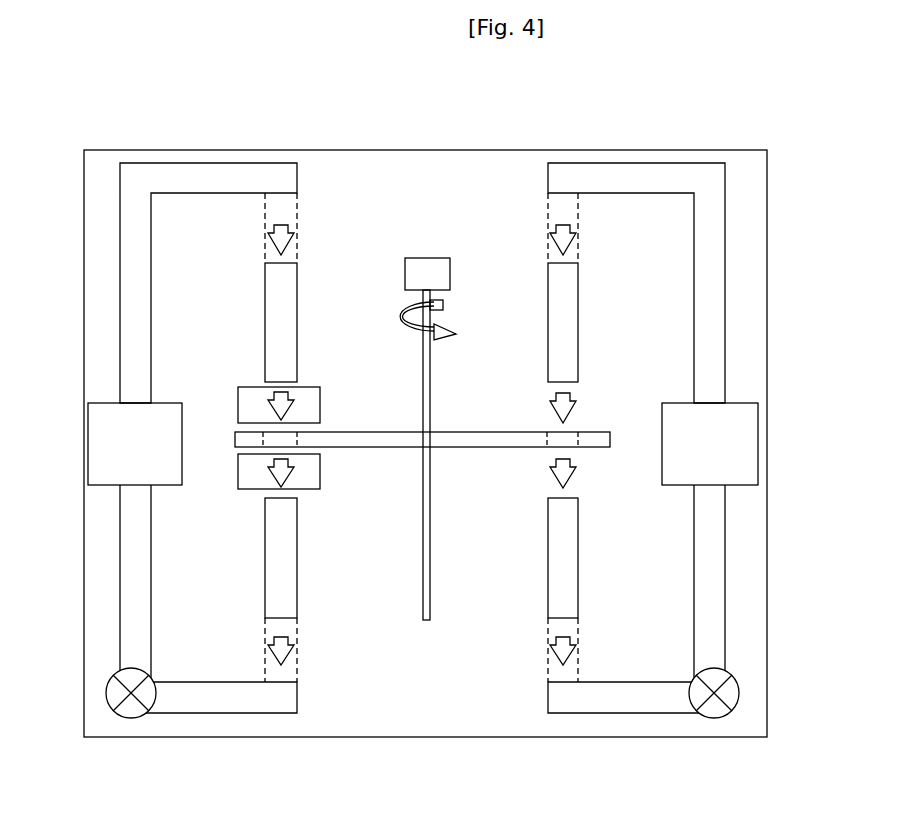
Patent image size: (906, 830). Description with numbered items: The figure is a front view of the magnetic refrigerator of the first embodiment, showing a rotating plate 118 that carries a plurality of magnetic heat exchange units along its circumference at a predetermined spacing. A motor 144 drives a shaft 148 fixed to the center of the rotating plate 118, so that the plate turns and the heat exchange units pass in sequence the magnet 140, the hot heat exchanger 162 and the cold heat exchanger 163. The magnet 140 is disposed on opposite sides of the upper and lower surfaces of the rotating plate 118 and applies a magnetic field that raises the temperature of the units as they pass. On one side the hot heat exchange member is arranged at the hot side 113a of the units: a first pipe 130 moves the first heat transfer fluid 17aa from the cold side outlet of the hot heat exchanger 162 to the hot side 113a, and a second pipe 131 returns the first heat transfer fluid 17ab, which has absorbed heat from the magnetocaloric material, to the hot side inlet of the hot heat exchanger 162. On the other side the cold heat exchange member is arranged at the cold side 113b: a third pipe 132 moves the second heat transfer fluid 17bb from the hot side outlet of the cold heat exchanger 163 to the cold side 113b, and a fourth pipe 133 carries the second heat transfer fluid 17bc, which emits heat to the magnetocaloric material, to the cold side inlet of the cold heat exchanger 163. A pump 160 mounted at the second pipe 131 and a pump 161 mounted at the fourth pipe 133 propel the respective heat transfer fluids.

The first pipe 130 is at (207, 148).
The second pipe 131 is at (207, 726).
The third pipe 132 is at (643, 148).
The fourth pipe 133 is at (644, 726).
The pump 160 is at (107, 693).
The pump 161 is at (739, 693).
The hot heat exchanger 162 is at (88, 432).
The cold heat exchanger 163 is at (758, 430).
The first heat transfer fluid 17aa is at (292, 242).
The first heat transfer fluid 17ab is at (292, 648).
The second heat transfer fluid 17bb is at (555, 238).
The second heat transfer fluid 17bc is at (575, 648).
The magnet 140 is at (238, 386).
The rotating plate 118 is at (367, 431).
The hot side 113a is at (295, 438).
The cold side 113b is at (570, 437).
The motor 144 is at (412, 236).
The shaft 148 is at (431, 388).